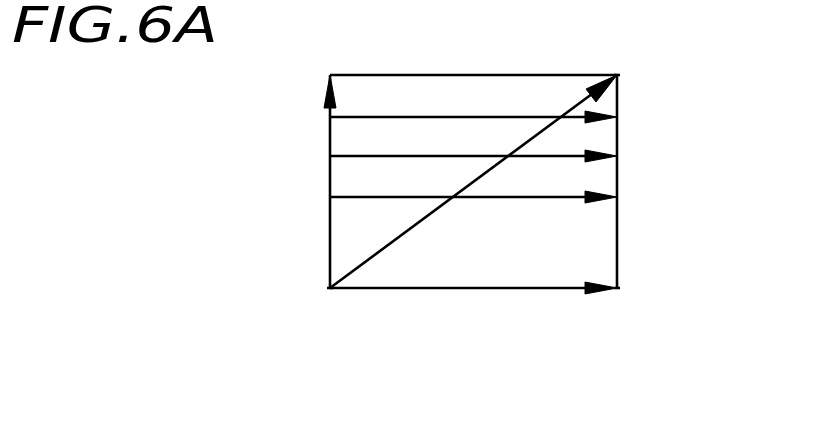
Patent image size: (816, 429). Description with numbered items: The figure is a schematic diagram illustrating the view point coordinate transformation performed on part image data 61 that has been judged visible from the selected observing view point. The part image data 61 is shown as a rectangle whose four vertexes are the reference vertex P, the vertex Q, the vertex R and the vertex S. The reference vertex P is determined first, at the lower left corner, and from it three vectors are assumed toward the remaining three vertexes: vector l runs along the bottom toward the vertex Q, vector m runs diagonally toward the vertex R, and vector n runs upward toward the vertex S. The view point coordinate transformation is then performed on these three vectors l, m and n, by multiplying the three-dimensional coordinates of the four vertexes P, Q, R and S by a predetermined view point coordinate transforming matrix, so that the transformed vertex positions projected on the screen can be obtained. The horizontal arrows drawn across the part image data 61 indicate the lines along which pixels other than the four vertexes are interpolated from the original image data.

The part image data 61 is at (515, 186).
The vertex S is at (316, 171).
The vertex R is at (632, 72).
The reference vertex P is at (314, 300).
The vertex Q is at (633, 300).
The vector n is at (456, 197).
The vector m is at (473, 181).
The vector l is at (473, 268).